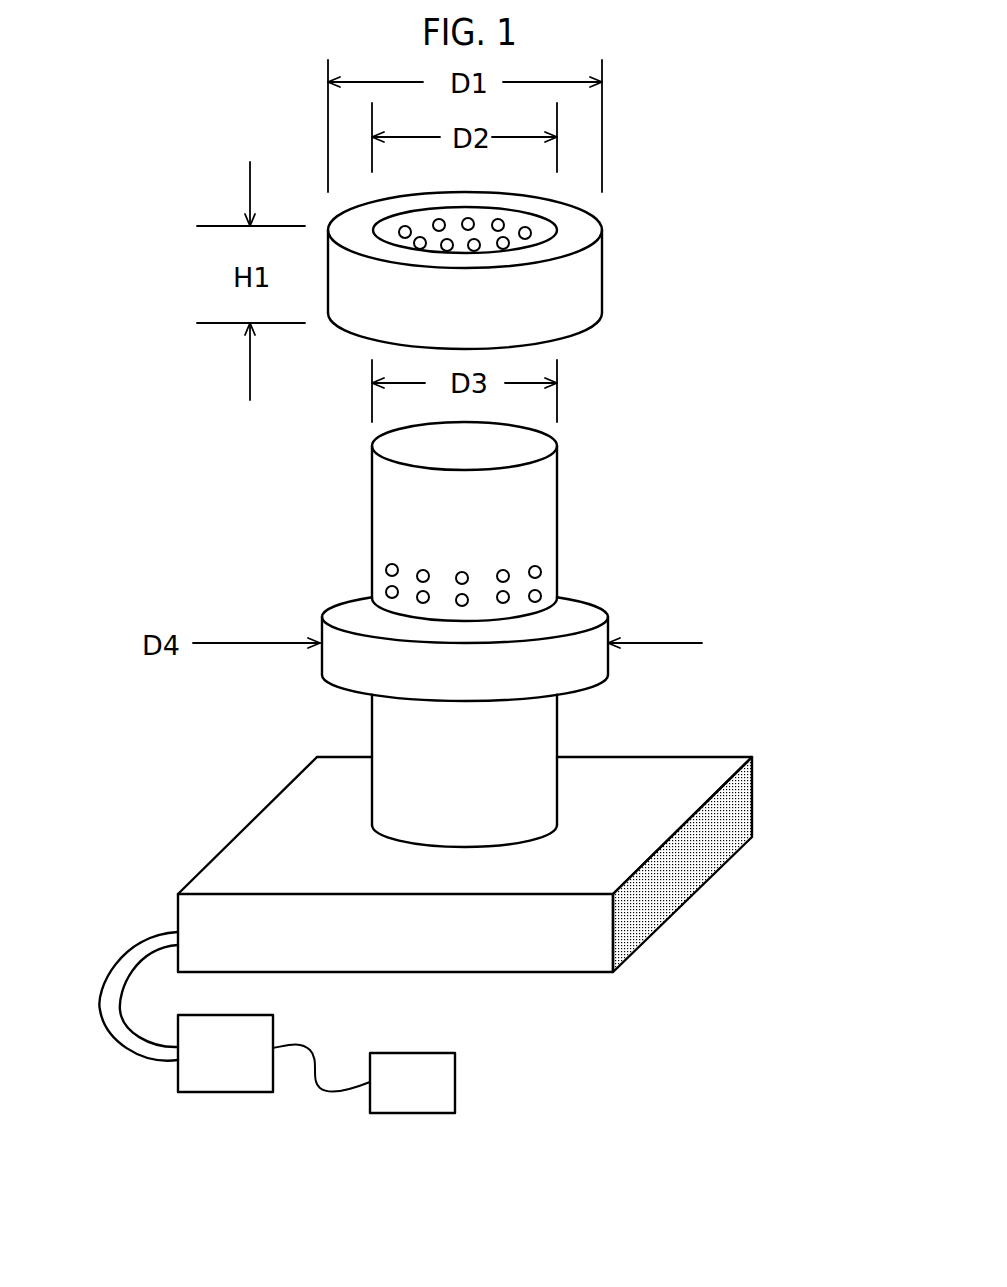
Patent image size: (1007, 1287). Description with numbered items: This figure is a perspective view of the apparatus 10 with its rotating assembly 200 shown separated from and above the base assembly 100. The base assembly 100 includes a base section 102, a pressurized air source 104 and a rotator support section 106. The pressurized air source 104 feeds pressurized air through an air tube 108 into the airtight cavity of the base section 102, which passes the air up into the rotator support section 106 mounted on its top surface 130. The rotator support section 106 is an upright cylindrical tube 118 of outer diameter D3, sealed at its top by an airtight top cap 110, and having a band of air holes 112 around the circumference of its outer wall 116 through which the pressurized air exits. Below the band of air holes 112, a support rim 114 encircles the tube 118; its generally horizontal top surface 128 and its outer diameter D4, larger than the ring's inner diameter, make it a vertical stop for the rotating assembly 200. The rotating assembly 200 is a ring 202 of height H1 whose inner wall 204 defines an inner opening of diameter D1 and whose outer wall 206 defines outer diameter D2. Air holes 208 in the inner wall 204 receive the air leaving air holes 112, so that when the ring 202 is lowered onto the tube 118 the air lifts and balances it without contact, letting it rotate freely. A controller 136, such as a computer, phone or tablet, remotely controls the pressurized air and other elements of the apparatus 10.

The apparatus 10 is at (160, 362).
The base assembly 100 is at (725, 685).
The base section 102 is at (663, 883).
The pressurized air source 104 is at (220, 1062).
The rotator support section 106 is at (315, 510).
The air tube 108 is at (128, 935).
The top cap 110 is at (530, 448).
The air holes 112 is at (543, 570).
The support rim 114 is at (602, 602).
The outer wall 116 is at (530, 522).
The cylindrical tube 118 is at (560, 477).
The top surface 128 is at (350, 607).
The top surface 130 is at (640, 807).
The controller 136 is at (417, 1088).
The rotating assembly 200 is at (682, 125).
The ring 202 is at (603, 302).
The inner wall 204 is at (528, 233).
The outer wall 206 is at (533, 300).
The air holes 208 is at (557, 237).